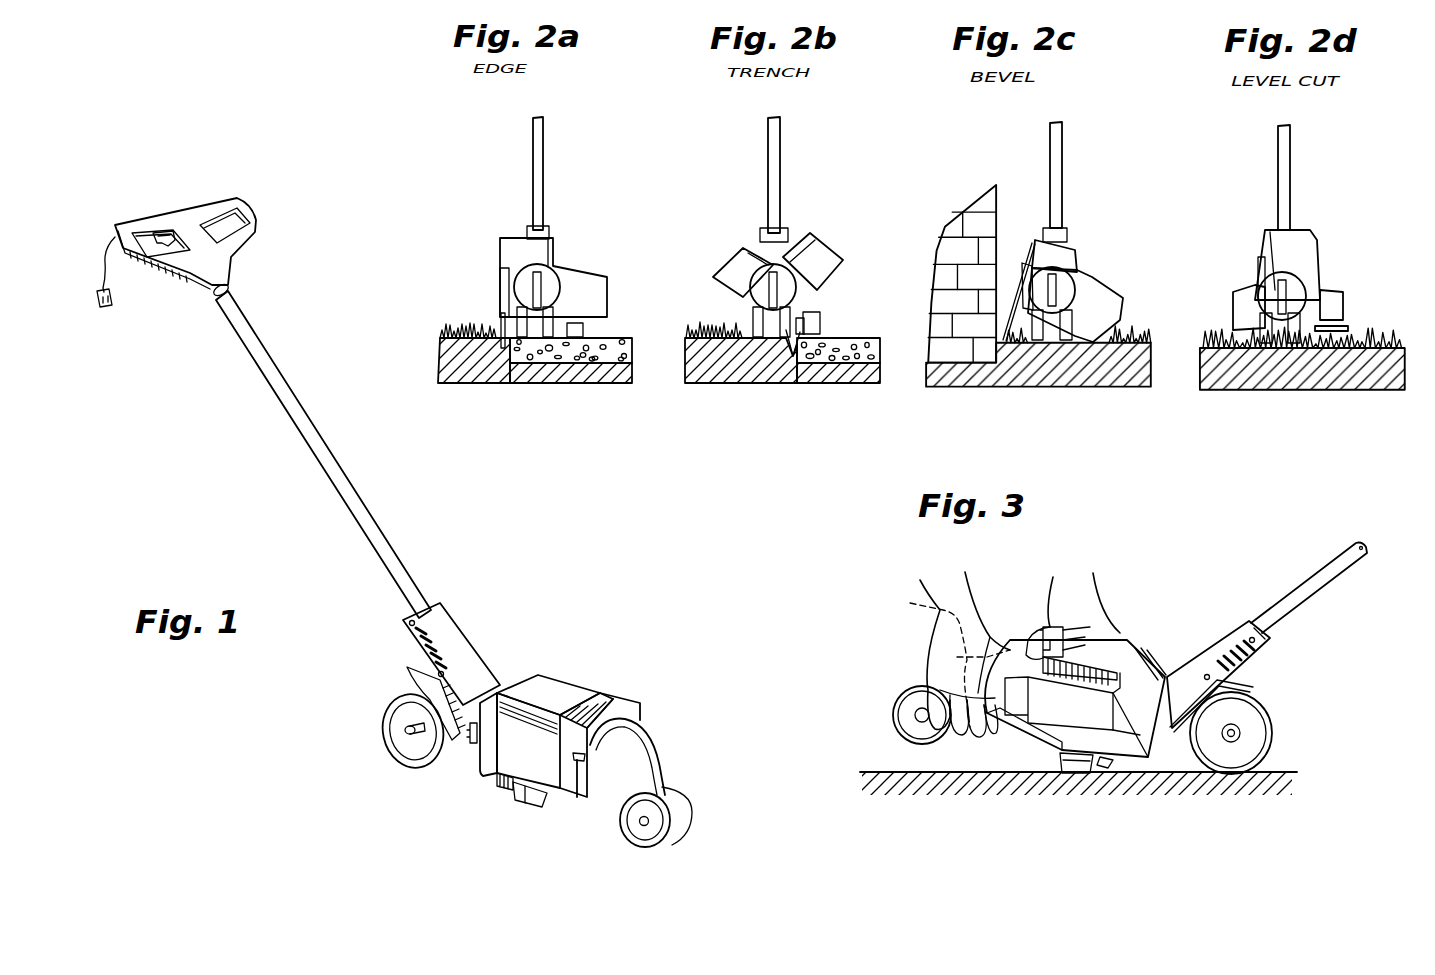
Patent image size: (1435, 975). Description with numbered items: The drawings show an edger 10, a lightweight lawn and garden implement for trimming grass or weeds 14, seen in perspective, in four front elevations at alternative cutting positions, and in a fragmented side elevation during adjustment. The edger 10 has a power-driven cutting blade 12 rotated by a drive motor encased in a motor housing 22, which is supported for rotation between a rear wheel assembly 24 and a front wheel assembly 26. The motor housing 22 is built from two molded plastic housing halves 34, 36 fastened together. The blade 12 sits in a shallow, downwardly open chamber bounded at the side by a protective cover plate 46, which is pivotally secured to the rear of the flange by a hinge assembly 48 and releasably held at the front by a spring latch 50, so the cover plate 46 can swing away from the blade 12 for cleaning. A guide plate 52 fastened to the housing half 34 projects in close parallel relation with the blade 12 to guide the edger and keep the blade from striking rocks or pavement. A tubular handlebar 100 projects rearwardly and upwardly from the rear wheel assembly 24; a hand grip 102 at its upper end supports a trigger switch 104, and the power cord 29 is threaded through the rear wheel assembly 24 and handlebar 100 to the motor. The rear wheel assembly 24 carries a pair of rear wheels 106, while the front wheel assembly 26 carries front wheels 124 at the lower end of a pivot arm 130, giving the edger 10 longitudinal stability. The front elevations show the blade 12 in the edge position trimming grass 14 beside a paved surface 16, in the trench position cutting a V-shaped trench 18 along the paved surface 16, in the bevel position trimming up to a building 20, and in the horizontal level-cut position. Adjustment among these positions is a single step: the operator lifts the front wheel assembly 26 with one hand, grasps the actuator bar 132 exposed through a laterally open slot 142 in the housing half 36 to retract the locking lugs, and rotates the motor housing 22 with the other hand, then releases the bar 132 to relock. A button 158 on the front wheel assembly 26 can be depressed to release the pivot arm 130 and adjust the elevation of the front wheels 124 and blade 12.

In FIG. 1, the edger 10 is at (357, 704).
In FIG. 2A, the edger 10 is at (489, 223).
In FIG. 2B, the edger 10 is at (733, 206).
In FIG. 2C, the edger 10 is at (1103, 235).
In FIG. 2D, the edger 10 is at (1351, 246).
In FIG. 3, the edger 10 is at (1152, 575).
In FIG. 1, the cutting blade 12 is at (500, 786).
In FIG. 2A, the cutting blade 12 is at (493, 360).
In FIG. 2B, the cutting blade 12 is at (812, 330).
In FIG. 2C, the cutting blade 12 is at (1015, 313).
In FIG. 2D, the cutting blade 12 is at (1345, 311).
In FIG. 3, the cutting blade 12 is at (1107, 762).
In FIG. 2A, the grass or weeds 14 is at (473, 320).
In FIG. 2B, the grass or weeds 14 is at (723, 320).
In FIG. 2C, the grass or weeds 14 is at (1010, 330).
In FIG. 2D, the grass or weeds 14 is at (1370, 309).
In FIG. 2A, the paved surface 16 is at (581, 358).
In FIG. 2B, the paved surface 16 is at (843, 363).
In FIG. 2B, the trench 18 is at (793, 360).
In FIG. 2C, the building 20 is at (980, 190).
In FIG. 1, the motor housing 22 is at (570, 714).
In FIG. 3, the motor housing 22 is at (1080, 703).
In FIG. 1, the rear wheel assembly 24 is at (490, 618).
In FIG. 3, the rear wheel assembly 24 is at (1260, 659).
In FIG. 1, the front wheel assembly 26 is at (678, 783).
In FIG. 3, the front wheel assembly 26 is at (993, 654).
In FIG. 1, the power cord 29 is at (104, 262).
In FIG. 1, the housing half 34 is at (527, 683).
In FIG. 1, the housing half 36 is at (585, 696).
In FIG. 1, the cover plate 46 is at (547, 782).
In FIG. 1, the hinge assembly 48 is at (467, 747).
In FIG. 1, the spring latch 50 is at (569, 778).
In FIG. 3, the guide plate 52 is at (1070, 763).
In FIG. 1, the handlebar 100 is at (317, 457).
In FIG. 2A, the handlebar 100 is at (545, 182).
In FIG. 1, the hand grip 102 is at (228, 259).
In FIG. 1, the switch 104 is at (165, 245).
In FIG. 1, the rear wheels 106 is at (385, 748).
In FIG. 3, the rear wheels 106 is at (1257, 740).
In FIG. 1, the front wheels 124 is at (670, 832).
In FIG. 3, the front wheels 124 is at (900, 733).
In FIG. 1, the pivot arm 130 is at (657, 770).
In FIG. 3, the actuator bar 132 is at (1047, 627).
In FIG. 3, the slot 142 is at (1122, 660).
In FIG. 3, the button 158 is at (920, 606).